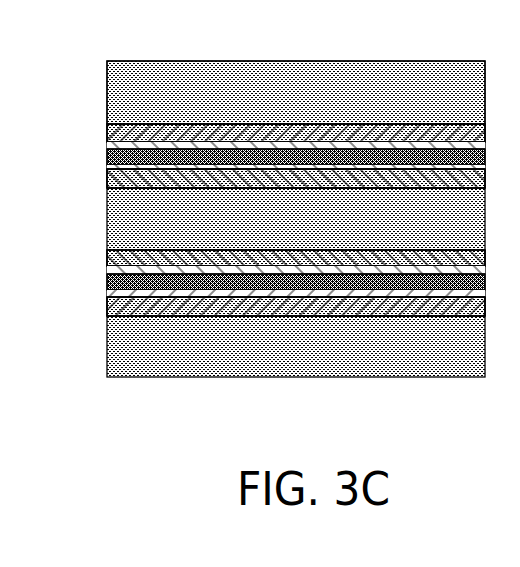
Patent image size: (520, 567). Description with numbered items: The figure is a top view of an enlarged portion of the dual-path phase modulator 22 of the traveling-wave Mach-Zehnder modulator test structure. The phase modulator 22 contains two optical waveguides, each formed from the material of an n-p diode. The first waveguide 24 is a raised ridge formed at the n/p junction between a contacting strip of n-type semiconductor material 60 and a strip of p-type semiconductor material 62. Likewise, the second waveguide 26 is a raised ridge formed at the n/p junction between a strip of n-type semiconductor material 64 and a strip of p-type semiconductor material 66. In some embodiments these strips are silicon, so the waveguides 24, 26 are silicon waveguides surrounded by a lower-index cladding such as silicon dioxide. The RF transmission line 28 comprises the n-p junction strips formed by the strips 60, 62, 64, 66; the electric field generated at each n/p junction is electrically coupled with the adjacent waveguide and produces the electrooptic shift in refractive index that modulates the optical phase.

The phase modulator 22 is at (367, 59).
The RF transmission line 28 is at (107, 92).
The n-type semiconductor material strip 60 is at (107, 129).
The optical waveguide 24 is at (107, 155).
The p-type semiconductor material strip 62 is at (107, 180).
The p-type semiconductor material strip 66 is at (107, 258).
The optical waveguide 26 is at (107, 281).
The n-type semiconductor material strip 64 is at (107, 305).